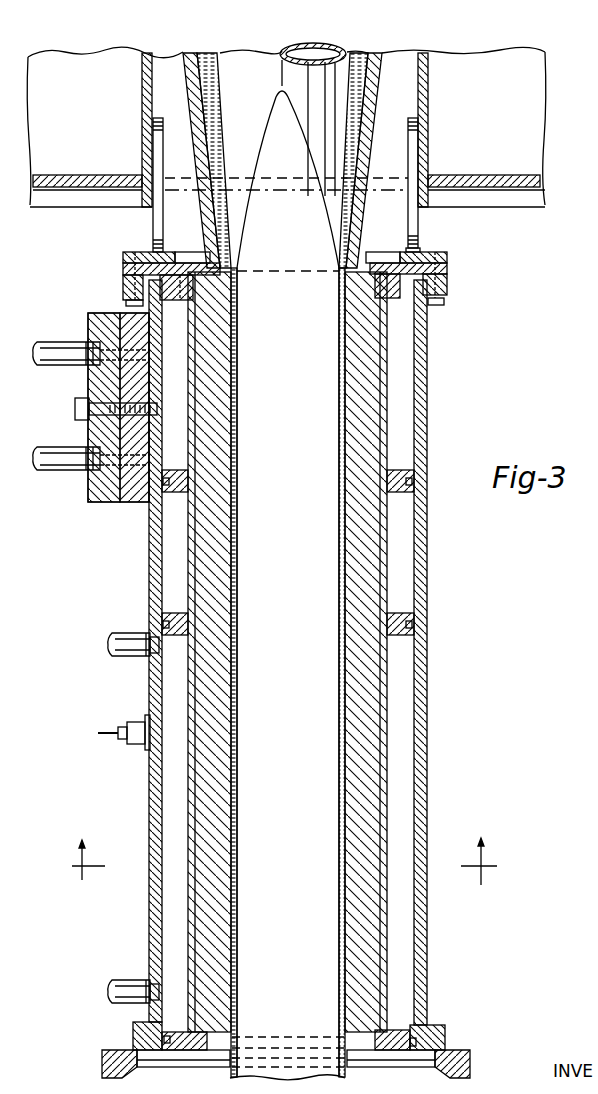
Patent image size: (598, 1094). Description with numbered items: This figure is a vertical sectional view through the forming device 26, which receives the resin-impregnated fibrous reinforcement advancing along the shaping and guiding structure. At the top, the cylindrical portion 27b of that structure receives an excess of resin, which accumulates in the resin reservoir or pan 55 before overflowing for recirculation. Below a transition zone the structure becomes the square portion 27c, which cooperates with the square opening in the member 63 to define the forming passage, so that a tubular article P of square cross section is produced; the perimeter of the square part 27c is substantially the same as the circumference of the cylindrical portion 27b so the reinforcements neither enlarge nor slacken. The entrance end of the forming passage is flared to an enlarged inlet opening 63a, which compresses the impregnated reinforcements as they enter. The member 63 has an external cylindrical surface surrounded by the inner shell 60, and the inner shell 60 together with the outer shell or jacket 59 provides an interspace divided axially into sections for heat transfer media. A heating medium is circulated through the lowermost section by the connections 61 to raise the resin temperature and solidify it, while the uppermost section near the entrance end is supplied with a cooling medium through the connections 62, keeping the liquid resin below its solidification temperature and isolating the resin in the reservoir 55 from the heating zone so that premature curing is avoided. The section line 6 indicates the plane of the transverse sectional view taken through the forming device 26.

The forming device 26 is at (299, 665).
The cylindrical portion of the shaping and guiding structure 27b is at (345, 31).
The square portion of the shaping and guiding structure 27c is at (318, 792).
The resin reservoir or pan 55 is at (378, 105).
The outer shell or jacket 59 is at (424, 321).
The inner shell 60 is at (385, 420).
The heating medium connections 61 is at (123, 633).
The cooling medium connections 62 is at (60, 372).
The forming passage member 63 is at (360, 573).
The flared inlet opening 63a is at (348, 318).
The section line 6- 6 is at (282, 862).
The tubular article of square shape P is at (228, 1076).